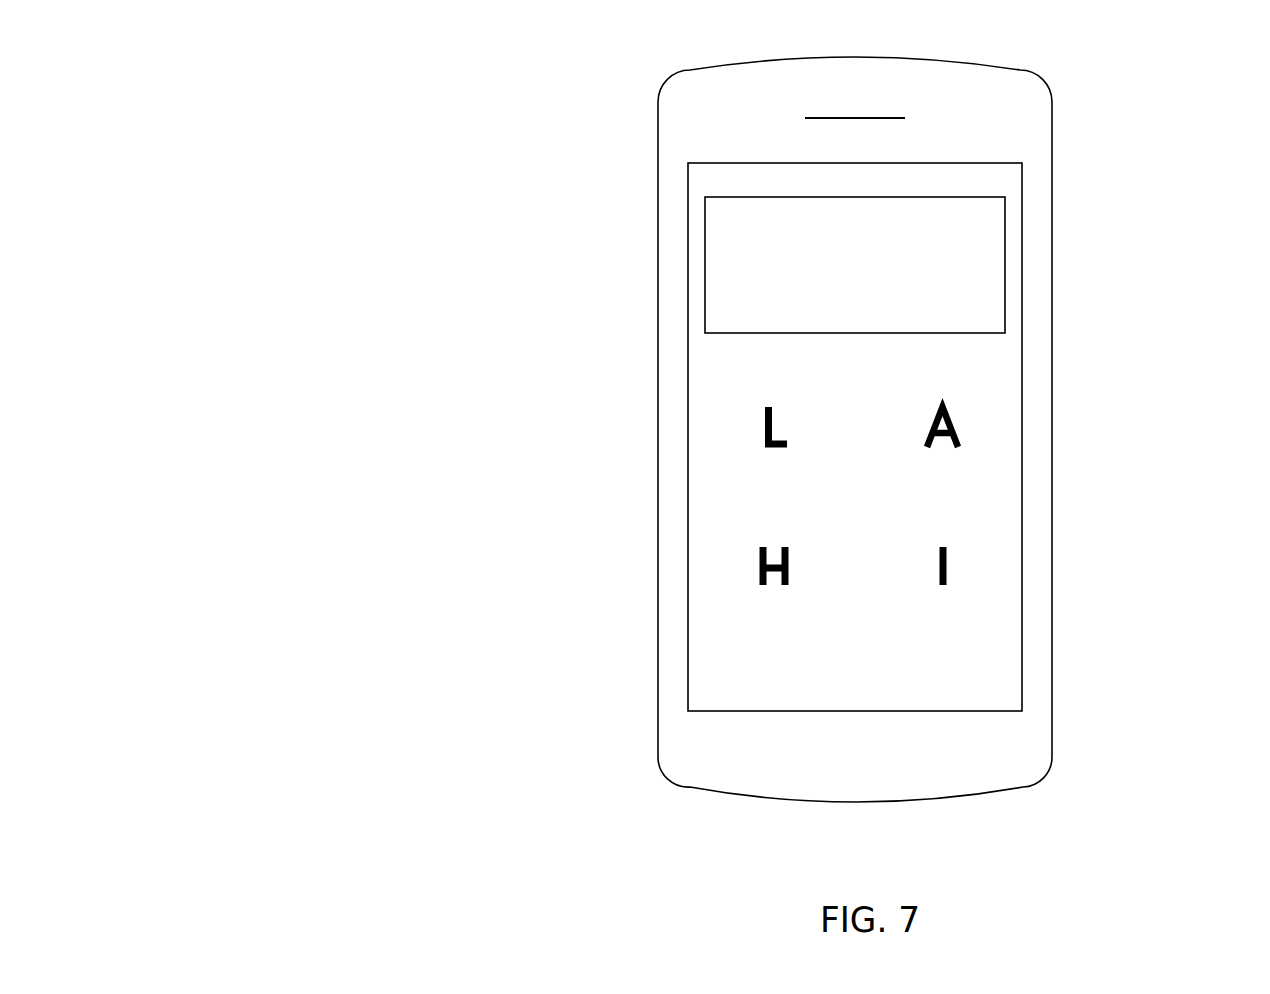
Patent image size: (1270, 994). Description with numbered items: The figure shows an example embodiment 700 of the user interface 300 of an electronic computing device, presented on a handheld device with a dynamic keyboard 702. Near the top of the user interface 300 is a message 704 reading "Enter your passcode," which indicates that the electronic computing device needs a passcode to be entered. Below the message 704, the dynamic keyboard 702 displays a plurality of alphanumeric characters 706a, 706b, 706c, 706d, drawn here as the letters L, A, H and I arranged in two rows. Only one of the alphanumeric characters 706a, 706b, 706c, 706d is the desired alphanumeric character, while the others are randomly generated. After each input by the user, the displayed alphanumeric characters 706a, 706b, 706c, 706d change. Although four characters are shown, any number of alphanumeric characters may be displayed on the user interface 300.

The user interface for passcode entry 700 is at (398, 123).
The user interface 300 is at (708, 677).
The dynamic keyboard 702 is at (692, 355).
The message 704 is at (975, 255).
The alphanumeric character 706a is at (740, 432).
The alphanumeric character 706b is at (740, 573).
The alphanumeric character 706c is at (963, 425).
The alphanumeric character 706d is at (963, 563).